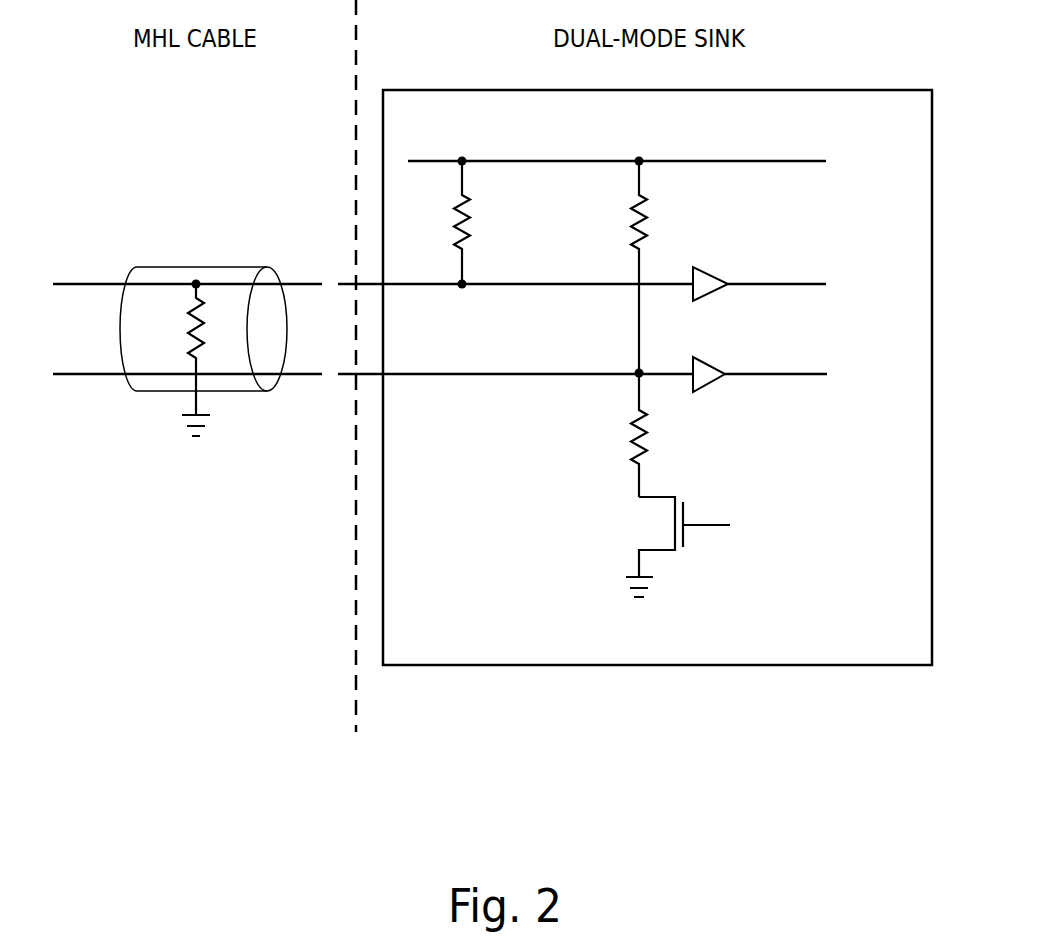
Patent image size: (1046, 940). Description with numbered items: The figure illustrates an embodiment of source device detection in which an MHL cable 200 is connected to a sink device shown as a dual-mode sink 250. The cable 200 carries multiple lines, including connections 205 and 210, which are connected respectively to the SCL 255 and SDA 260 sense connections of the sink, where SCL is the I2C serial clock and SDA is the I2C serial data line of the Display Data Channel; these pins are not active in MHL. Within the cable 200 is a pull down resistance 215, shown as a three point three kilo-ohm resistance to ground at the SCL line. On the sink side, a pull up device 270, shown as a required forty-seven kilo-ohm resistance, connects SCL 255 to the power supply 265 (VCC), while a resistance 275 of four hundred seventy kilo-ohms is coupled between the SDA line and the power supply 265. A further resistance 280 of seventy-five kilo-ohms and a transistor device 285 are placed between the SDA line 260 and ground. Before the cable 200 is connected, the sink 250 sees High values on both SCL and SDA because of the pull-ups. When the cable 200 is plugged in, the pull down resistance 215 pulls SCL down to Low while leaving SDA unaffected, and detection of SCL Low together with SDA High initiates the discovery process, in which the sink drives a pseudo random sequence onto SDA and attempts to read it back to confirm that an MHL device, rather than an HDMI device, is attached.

The MHL cable 200 is at (152, 232).
The connection 205 is at (83, 284).
The connection 210 is at (83, 374).
The pull down resistance 215 is at (207, 315).
The dual-mode sink 250 is at (870, 90).
The SCL 255 is at (783, 284).
The SDA 260 is at (782, 374).
The power supply 265 is at (783, 161).
The pull up device 270 is at (473, 227).
The resistance 275 is at (647, 227).
The resistance 280 is at (650, 437).
The transistor device 285 is at (655, 503).